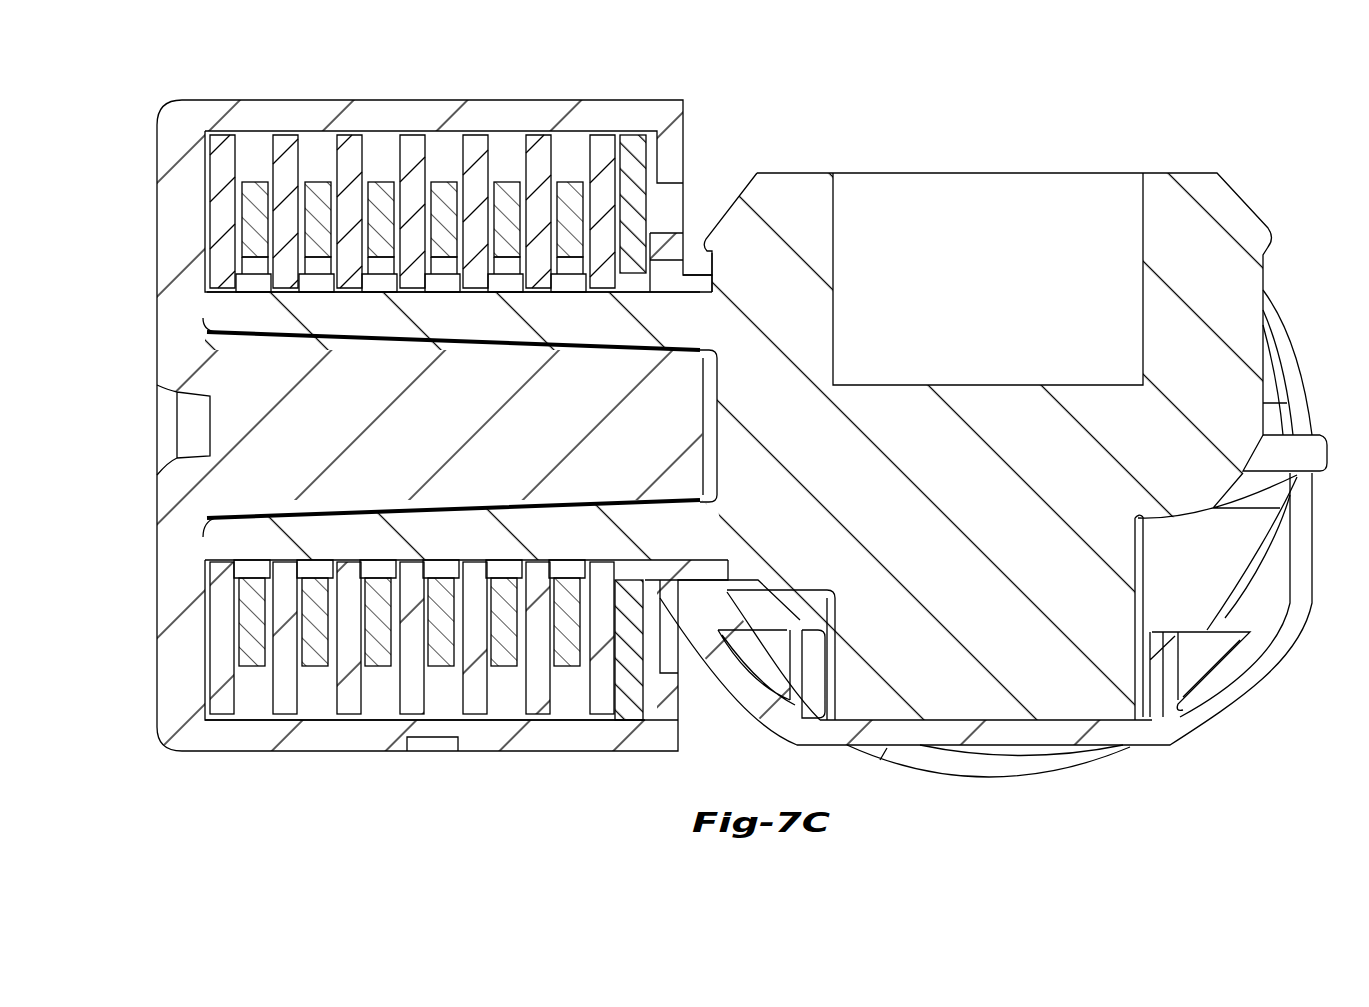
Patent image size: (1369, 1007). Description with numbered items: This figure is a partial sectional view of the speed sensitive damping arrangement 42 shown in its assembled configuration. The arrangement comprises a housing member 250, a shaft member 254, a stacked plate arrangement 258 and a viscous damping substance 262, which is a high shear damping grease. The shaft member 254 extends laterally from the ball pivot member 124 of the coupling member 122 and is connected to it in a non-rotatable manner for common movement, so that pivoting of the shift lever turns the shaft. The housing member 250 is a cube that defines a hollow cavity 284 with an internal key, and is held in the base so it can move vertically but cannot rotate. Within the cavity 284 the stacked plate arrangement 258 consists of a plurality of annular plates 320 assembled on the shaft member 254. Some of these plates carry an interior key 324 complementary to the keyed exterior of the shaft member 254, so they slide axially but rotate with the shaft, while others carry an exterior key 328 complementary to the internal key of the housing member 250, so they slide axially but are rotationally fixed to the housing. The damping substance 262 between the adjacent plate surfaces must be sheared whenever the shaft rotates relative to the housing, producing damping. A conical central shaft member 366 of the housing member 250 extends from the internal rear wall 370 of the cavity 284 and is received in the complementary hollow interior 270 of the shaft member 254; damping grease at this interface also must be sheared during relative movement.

The speed sensitive damping arrangement 42 is at (1100, 131).
The coupling member 122 is at (1232, 712).
The ball pivot member 124 is at (1290, 320).
The housing member 250 is at (500, 115).
The shaft member 254 is at (214, 326).
The stacked plate arrangement 258 is at (498, 718).
The viscous damping substance 262 is at (318, 143).
The hollow interior 270 is at (312, 512).
The hollow cavity 284 is at (688, 181).
The annular plates 320 is at (283, 660).
The interior key 324 is at (565, 283).
The exterior key 328 is at (214, 695).
The central shaft member 366 is at (470, 431).
The internal rear wall 370 is at (265, 313).